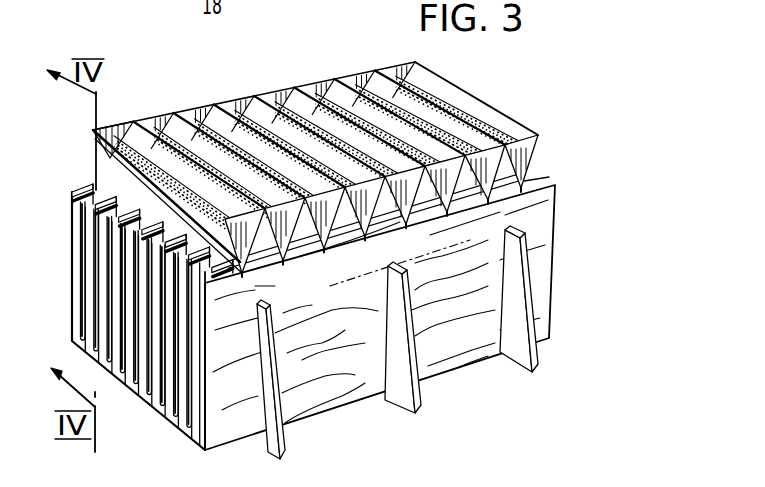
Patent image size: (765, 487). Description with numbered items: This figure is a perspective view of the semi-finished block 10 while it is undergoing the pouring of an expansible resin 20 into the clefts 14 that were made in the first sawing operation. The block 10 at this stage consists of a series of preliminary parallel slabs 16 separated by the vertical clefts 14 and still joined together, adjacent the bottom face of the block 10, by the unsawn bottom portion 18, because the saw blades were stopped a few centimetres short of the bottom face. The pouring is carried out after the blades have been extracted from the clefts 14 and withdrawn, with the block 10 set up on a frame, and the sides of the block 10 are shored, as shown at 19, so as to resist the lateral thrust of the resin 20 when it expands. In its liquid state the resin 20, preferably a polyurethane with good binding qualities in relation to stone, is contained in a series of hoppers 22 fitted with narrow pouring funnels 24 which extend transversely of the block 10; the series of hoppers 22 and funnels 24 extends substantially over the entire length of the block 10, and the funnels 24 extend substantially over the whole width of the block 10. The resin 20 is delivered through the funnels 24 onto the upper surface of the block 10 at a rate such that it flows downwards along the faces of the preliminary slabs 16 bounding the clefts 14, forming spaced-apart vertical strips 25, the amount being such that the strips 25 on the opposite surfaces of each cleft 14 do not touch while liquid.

The block 10 is at (558, 258).
The clefts 14 is at (110, 307).
The preliminary parallel slabs 16 is at (542, 178).
The unsawn bottom portion 18 is at (137, 388).
The shoring 19 is at (395, 374).
The resin 20 is at (128, 134).
The hoppers 22 is at (104, 162).
The pouring funnels 24 is at (347, 226).
The vertical strips 25 is at (515, 307).